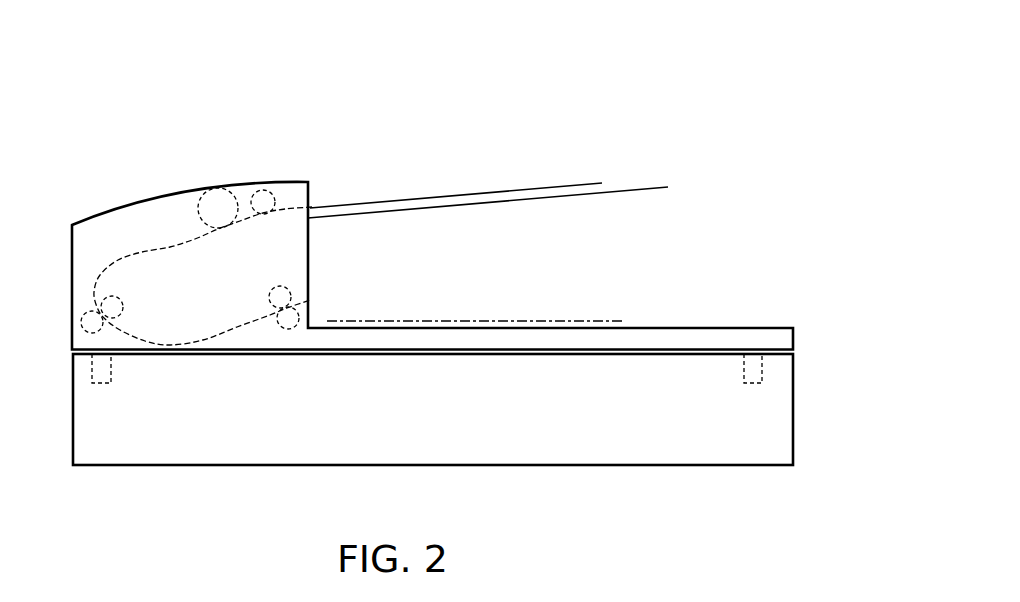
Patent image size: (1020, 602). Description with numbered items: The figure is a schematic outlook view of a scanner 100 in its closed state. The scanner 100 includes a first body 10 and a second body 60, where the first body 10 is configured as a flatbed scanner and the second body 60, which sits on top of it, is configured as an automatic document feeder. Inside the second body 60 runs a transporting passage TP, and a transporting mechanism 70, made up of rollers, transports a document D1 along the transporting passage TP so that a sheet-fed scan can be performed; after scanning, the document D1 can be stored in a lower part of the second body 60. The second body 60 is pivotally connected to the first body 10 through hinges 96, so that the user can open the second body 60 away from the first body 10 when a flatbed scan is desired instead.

The scanner 100 is at (378, 68).
The second body 60 is at (173, 194).
The first body 10 is at (796, 409).
The hinges 96 is at (111, 375).
The transporting mechanism 70 is at (124, 303).
The transporting passage TP is at (142, 252).
The document D1 is at (447, 197).